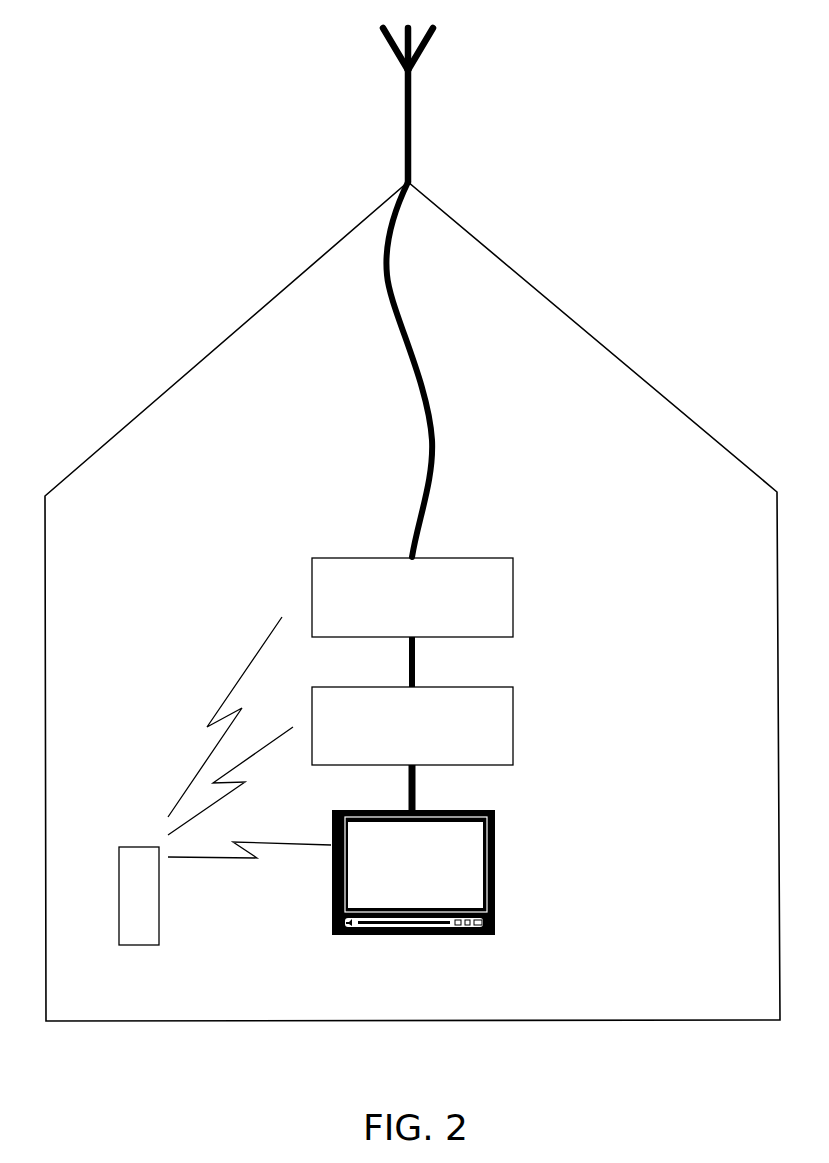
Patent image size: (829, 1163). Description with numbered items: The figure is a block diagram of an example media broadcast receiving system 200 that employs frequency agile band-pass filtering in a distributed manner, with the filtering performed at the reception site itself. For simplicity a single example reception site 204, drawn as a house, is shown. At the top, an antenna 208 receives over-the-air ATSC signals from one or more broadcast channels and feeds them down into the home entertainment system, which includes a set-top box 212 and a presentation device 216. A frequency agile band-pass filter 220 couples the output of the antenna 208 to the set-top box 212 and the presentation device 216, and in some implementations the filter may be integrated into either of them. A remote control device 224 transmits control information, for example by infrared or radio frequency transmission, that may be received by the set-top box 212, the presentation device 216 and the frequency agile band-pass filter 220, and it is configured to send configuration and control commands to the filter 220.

The media broadcast receiving system 200 is at (116, 55).
The reception site 204 is at (627, 365).
The antenna 208 is at (411, 116).
The set-top box 212 is at (513, 722).
The presentation device 216 is at (495, 872).
The frequency agile band-pass filter 220 is at (513, 595).
The remote control device 224 is at (140, 947).